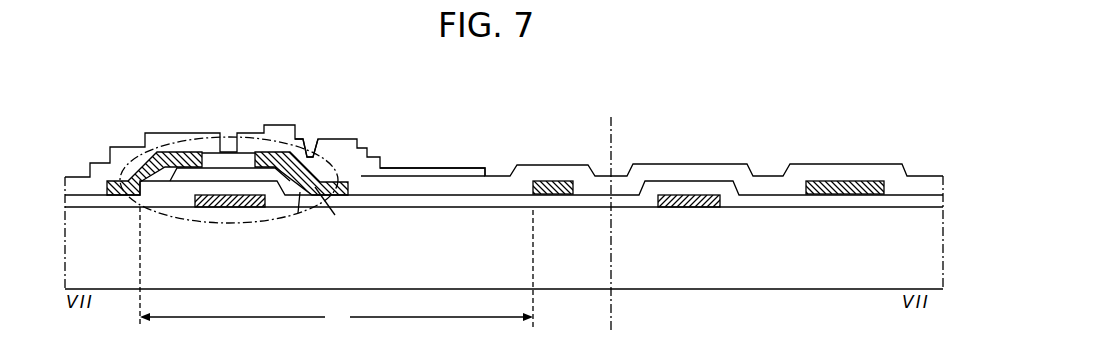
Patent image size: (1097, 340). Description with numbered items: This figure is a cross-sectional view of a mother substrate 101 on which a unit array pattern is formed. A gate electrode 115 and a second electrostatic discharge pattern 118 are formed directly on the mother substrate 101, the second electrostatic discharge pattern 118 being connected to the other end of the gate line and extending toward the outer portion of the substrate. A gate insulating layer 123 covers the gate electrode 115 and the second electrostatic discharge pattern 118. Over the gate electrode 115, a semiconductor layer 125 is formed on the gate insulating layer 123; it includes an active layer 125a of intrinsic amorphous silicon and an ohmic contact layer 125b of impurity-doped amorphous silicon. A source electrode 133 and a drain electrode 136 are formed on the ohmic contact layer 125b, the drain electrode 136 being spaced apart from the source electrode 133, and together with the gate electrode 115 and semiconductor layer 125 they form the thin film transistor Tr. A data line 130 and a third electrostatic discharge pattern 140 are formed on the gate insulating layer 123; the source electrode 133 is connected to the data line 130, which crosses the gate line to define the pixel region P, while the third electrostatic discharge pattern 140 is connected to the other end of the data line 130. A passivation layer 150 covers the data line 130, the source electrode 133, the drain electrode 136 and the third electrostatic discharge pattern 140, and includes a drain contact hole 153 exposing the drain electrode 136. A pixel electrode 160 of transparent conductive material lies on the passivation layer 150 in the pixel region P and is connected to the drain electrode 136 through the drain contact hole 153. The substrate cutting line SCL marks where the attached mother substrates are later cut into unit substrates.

The mother substrate 101 is at (928, 280).
The gate electrode 115 is at (200, 207).
The second electrostatic discharge pattern 118 is at (687, 208).
The gate insulating layer 123 is at (427, 202).
The semiconductor layer 125 is at (372, 262).
The active layer 125a is at (298, 206).
The ohmic contact layer 125b is at (315, 195).
The data line 130 is at (553, 183).
The source electrode 133 is at (178, 158).
The drain electrode 136 is at (265, 157).
The third electrostatic discharge pattern 140 is at (828, 185).
The passivation layer 150 is at (486, 182).
The drain contact hole 153 is at (314, 138).
The pixel electrode 160 is at (422, 168).
The thin film transistor Tr is at (188, 222).
The substrate cutting line SCL is at (616, 132).
The pixel region P is at (336, 267).